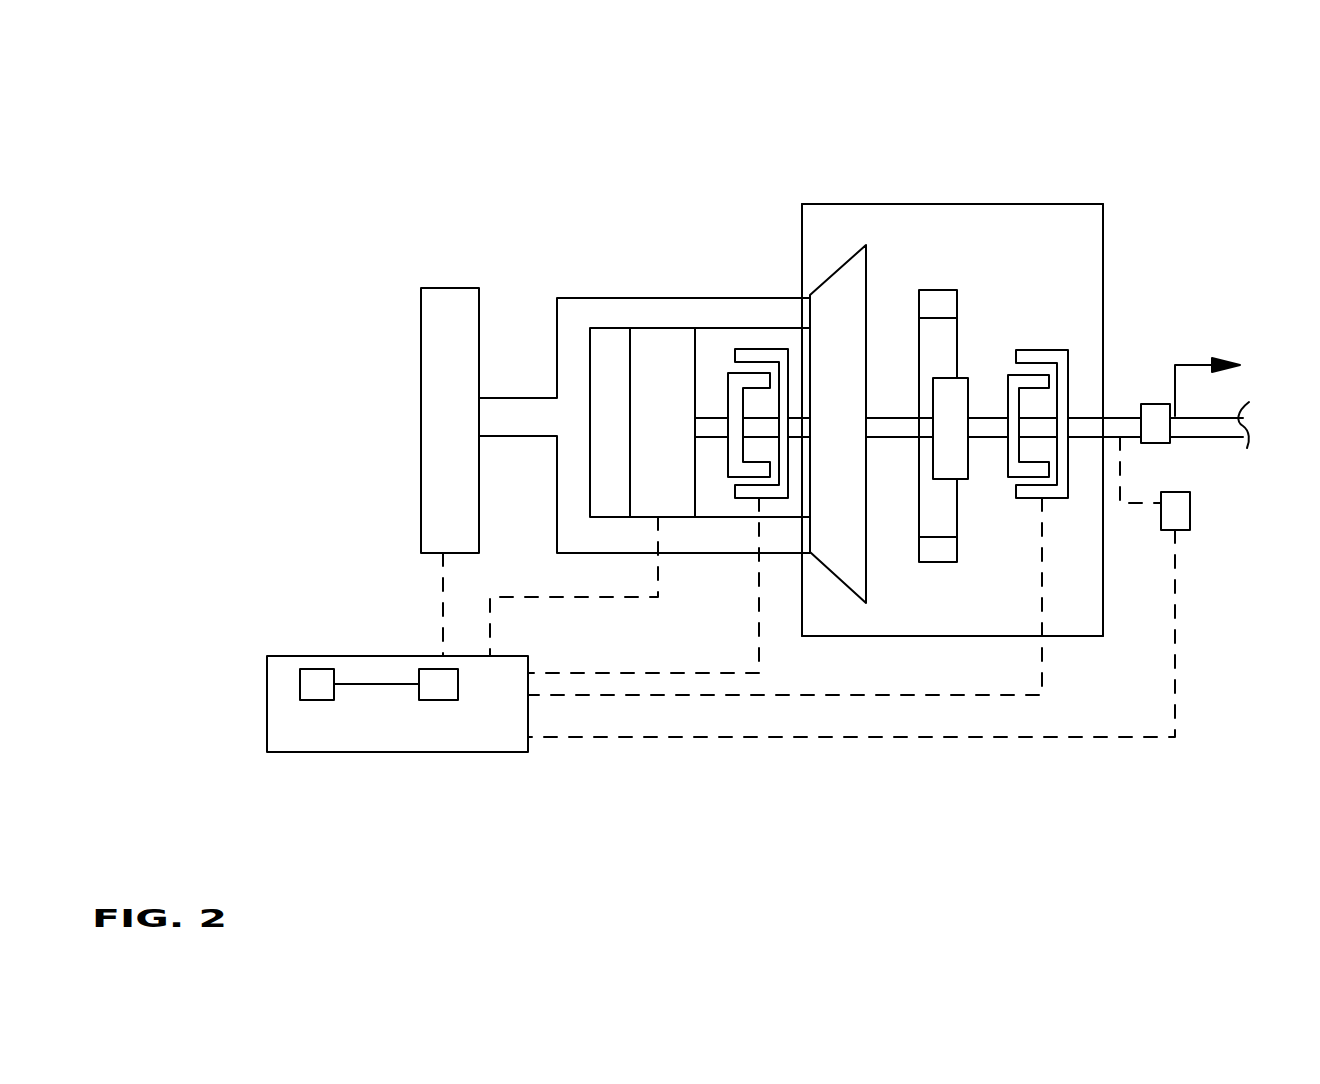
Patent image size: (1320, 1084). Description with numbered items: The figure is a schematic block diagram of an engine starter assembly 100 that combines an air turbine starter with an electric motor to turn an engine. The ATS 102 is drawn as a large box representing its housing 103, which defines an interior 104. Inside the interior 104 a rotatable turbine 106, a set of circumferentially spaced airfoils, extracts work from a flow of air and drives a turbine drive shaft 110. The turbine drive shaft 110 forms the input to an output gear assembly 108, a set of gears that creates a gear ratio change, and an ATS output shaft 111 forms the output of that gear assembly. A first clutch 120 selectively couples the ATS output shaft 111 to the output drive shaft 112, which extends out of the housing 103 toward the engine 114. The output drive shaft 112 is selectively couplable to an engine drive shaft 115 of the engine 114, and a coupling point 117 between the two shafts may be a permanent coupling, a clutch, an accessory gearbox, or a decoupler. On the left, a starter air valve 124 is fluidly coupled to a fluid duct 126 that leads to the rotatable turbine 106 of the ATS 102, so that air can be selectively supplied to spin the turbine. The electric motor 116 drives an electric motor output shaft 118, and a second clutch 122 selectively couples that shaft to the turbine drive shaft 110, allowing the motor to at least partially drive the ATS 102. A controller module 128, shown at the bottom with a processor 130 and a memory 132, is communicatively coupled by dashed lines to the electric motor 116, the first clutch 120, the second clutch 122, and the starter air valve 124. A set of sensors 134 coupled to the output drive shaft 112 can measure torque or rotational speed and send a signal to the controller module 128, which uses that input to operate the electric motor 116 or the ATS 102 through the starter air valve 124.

The engine starter assembly 100 is at (379, 102).
The ATS 102 is at (1090, 181).
The housing 103 is at (1103, 253).
The interior 104 is at (979, 613).
The rotatable turbine 106 is at (843, 263).
The output gear assembly 108 is at (955, 302).
The turbine drive shaft 110 is at (888, 417).
The ATS output shaft 111 is at (988, 417).
The output drive shaft 112 is at (1117, 415).
The engine 114 is at (1192, 365).
The engine drive shaft 115 is at (1242, 413).
The electric motor 116 is at (628, 350).
The coupling point 117 is at (1170, 443).
The electric motor output shaft 118 is at (716, 417).
The first clutch 120 is at (1039, 350).
The second clutch 122 is at (758, 349).
The starter air valve 124 is at (421, 416).
The fluid duct 126 is at (557, 307).
The controller module 128 is at (267, 687).
The processor 130 is at (317, 669).
The memory 132 is at (433, 669).
The set of sensors 134 is at (1192, 513).